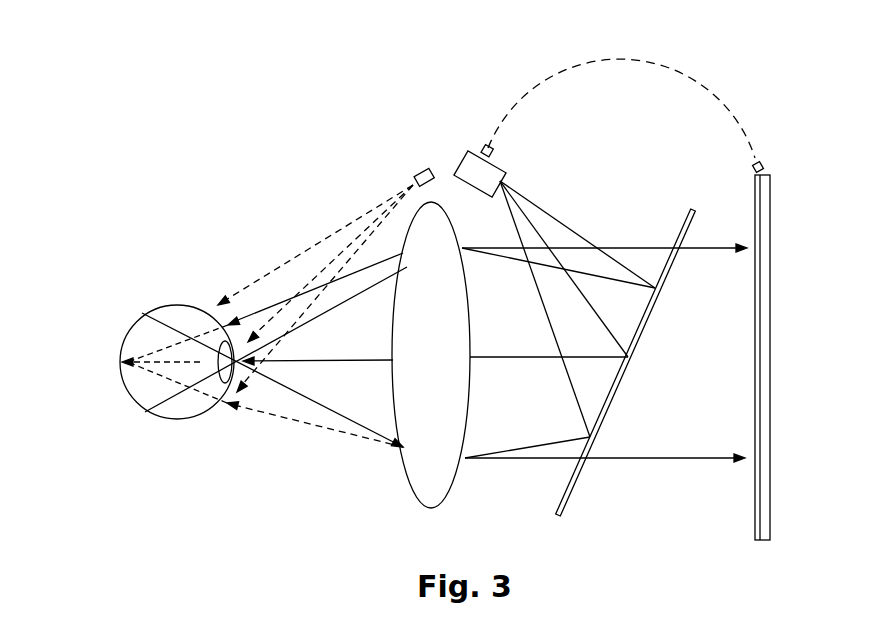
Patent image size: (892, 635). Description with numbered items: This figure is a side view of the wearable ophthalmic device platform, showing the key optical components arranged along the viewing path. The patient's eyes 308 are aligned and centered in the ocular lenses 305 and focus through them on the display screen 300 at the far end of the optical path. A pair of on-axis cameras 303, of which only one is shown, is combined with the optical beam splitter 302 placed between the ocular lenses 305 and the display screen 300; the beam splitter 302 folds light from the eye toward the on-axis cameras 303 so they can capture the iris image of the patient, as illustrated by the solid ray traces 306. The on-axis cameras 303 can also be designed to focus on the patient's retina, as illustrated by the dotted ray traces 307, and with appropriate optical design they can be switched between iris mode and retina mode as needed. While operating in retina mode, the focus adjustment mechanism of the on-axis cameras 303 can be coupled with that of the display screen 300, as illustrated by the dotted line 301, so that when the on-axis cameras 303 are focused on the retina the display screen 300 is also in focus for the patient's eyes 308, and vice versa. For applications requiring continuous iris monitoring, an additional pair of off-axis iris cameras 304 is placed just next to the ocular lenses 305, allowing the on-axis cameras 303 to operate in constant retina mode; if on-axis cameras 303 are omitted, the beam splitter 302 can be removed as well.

The display screen 300 is at (772, 197).
The dotted line 301 is at (705, 80).
The optical beam splitter 302 is at (693, 230).
The on-axis cameras 303 is at (457, 160).
The off-axis iris cameras 304 is at (415, 172).
The ocular lenses 305 is at (422, 472).
The solid ray traces 306 is at (243, 313).
The dotted ray traces 307 is at (153, 353).
The patient's eyes 308 is at (202, 418).